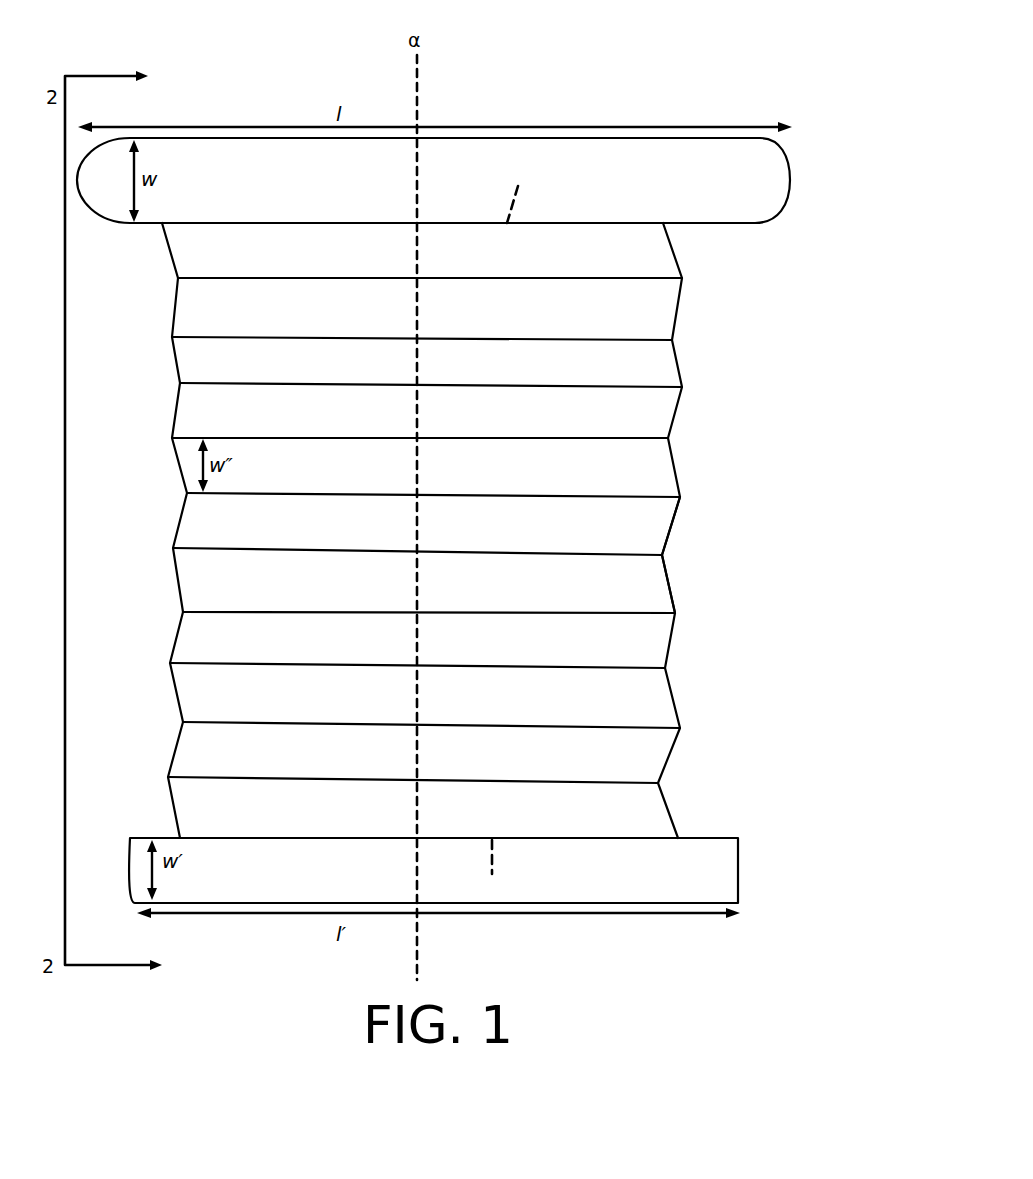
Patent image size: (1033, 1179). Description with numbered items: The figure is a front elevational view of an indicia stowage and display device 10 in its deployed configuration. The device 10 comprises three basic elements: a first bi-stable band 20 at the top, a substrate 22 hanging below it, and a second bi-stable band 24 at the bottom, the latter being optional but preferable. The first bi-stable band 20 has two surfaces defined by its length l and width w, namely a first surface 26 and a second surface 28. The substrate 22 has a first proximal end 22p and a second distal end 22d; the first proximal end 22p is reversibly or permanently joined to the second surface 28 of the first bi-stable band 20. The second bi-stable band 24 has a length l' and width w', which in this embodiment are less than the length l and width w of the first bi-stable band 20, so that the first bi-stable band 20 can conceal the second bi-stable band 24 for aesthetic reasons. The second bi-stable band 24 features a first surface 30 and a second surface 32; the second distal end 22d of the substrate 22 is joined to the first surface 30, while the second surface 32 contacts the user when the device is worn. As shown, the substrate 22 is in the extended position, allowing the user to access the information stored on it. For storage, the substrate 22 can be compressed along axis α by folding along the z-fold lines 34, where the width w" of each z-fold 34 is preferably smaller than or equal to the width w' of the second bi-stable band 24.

The device 10 is at (727, 56).
The first bi-stable band 20 is at (457, 180).
The substrate 22 is at (570, 402).
The first proximal end 22p is at (557, 223).
The second distal end 22d is at (557, 837).
The second bi-stable band 24 is at (477, 864).
The first surface 26 is at (433, 180).
The second surface 28 is at (507, 223).
The first surface 30 is at (492, 838).
The second surface 32 is at (433, 870).
The z-fold lines 34 is at (677, 613).